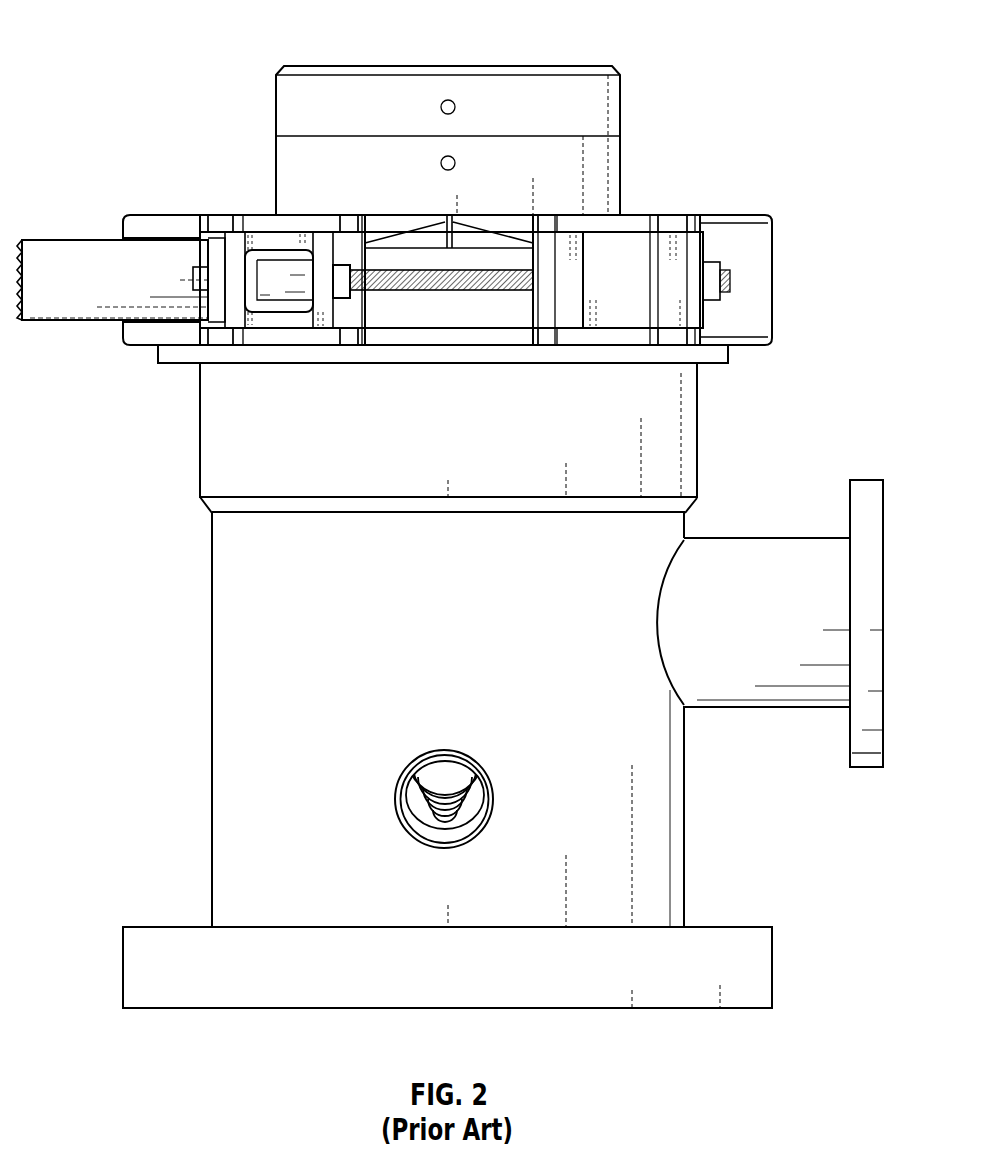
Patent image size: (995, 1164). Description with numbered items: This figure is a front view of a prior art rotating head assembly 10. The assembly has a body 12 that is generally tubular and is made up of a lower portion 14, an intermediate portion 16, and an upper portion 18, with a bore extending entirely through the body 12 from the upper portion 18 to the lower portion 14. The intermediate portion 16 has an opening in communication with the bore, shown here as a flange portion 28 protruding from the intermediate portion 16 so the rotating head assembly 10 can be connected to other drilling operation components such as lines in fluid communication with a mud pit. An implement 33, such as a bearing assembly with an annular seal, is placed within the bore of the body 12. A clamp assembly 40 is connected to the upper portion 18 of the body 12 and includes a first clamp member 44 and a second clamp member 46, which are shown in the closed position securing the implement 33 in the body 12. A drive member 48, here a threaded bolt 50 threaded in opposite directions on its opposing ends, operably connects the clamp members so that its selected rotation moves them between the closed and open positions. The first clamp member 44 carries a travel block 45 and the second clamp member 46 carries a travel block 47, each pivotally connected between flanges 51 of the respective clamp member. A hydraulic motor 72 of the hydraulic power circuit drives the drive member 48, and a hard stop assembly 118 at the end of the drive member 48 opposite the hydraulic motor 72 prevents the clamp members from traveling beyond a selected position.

The rotating head assembly 10 is at (157, 37).
The body 12 is at (212, 545).
The lower portion 14 is at (123, 968).
The intermediate portion 16 is at (212, 645).
The upper portion 18 is at (728, 352).
The flange portion 28 is at (865, 768).
The implement 33 is at (620, 148).
The clamp assembly 40 is at (773, 233).
The first clamp member 44 is at (773, 285).
The travel block 45 is at (634, 330).
The second clamp member 46 is at (122, 328).
The travel block 47 is at (290, 323).
The drive member 48 is at (382, 292).
The threaded bolt 50 is at (462, 292).
The flanges 51 is at (258, 213).
The hydraulic motor 72 is at (68, 240).
The hard stop assembly 118 is at (716, 300).